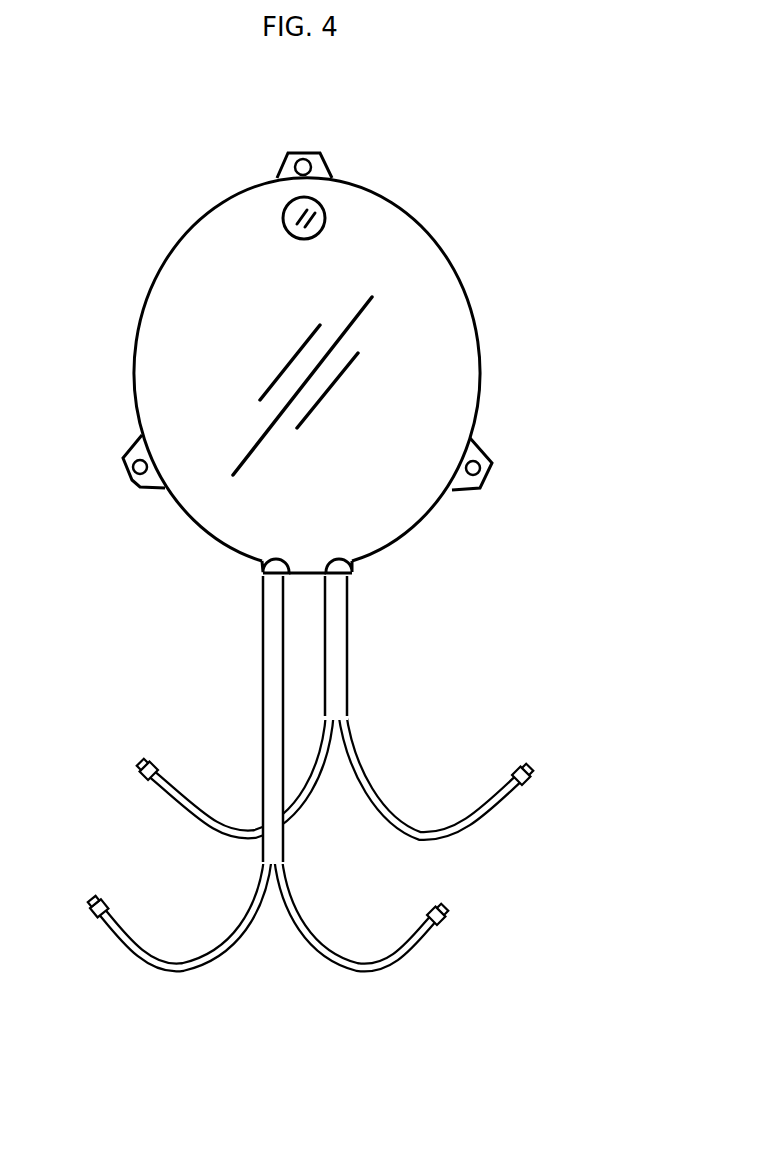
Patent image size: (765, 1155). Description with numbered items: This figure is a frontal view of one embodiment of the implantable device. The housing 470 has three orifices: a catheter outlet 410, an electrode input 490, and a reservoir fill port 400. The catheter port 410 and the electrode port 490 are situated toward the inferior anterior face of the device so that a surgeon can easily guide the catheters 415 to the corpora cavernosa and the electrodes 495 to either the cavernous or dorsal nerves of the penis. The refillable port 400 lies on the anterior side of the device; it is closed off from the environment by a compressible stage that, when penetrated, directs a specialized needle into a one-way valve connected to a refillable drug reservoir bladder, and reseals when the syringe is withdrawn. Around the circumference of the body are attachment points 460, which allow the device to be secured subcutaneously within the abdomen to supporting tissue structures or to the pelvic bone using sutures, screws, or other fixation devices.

The reservoir fill port 400 is at (320, 198).
The catheter outlet 410 is at (258, 572).
The catheters 415 is at (260, 705).
The attachment point 460 is at (283, 162).
The housing 470 is at (428, 399).
The electrode input 490 is at (356, 573).
The electrodes 495 is at (349, 706).